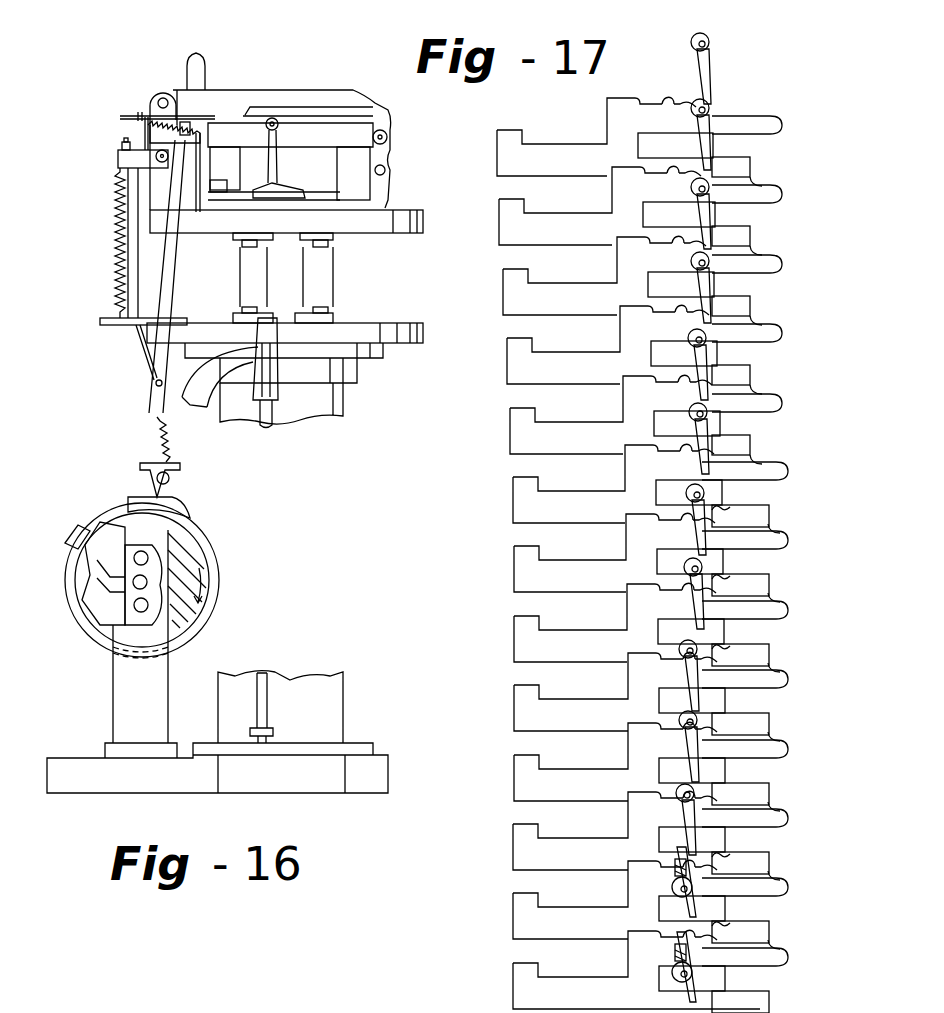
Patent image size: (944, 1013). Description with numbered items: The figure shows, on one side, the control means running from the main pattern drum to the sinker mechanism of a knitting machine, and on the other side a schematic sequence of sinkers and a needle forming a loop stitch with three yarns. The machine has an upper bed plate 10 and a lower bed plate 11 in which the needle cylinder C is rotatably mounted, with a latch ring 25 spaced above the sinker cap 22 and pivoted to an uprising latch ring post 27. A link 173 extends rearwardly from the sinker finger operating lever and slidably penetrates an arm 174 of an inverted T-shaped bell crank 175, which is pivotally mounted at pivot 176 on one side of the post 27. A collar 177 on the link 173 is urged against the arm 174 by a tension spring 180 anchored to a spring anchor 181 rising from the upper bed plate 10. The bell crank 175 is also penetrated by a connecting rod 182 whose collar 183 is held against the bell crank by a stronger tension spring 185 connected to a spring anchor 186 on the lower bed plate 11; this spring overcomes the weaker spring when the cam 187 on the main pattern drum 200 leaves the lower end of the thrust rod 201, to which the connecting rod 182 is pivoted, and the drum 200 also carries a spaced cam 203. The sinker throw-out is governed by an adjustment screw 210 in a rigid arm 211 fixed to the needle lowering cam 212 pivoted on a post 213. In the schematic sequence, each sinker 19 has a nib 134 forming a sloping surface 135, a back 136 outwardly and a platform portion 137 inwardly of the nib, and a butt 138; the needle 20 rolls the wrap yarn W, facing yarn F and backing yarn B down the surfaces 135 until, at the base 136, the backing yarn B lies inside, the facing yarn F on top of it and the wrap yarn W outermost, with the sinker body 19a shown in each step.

In FIG. 16, the upper bed plate 10 is at (412, 210).
In FIG. 16, the lower bed plate 11 is at (418, 325).
In FIG. 16, the sinker cap 22 is at (350, 150).
In FIG. 16, the latch ring 25 is at (310, 90).
In FIG. 16, the latch ring post 27 is at (170, 205).
In FIG. 16, the link 173 is at (183, 121).
In FIG. 16, the arm 174 is at (148, 131).
In FIG. 16, the bell crank 175 is at (118, 160).
In FIG. 16, the pivot 176 is at (165, 163).
In FIG. 16, the collar 177 is at (138, 112).
In FIG. 16, the tension spring 180 is at (153, 98).
In FIG. 16, the spring anchor 181 is at (200, 172).
In FIG. 16, the connecting rod 182 is at (137, 236).
In FIG. 16, the collar 183 is at (122, 146).
In FIG. 16, the tension spring 185 is at (115, 236).
In FIG. 16, the spring anchor 186 is at (102, 325).
In FIG. 16, the cam 187 is at (182, 510).
In FIG. 16, the main pattern drum 200 is at (217, 578).
In FIG. 16, the thrust rod 201 is at (150, 402).
In FIG. 16, the cam 203 is at (76, 530).
In FIG. 16, the adjustment screw 210 is at (277, 128).
In FIG. 16, the rigid arm 211 is at (278, 158).
In FIG. 16, the needle lowering cam 212 is at (285, 184).
In FIG. 16, the post 213 is at (220, 205).
In FIG. 16, the needle cylinder C is at (327, 277).
In FIG. 17, the sinker 19 is at (776, 118).
In FIG. 17, the heddle block 19a is at (760, 580).
In FIG. 17, the needle 20 is at (712, 41).
In FIG. 17, the nib 134 is at (697, 921).
In FIG. 17, the sloping surface 135 is at (670, 92).
In FIG. 17, the back 136 is at (645, 95).
In FIG. 17, the platform portion 137 is at (730, 855).
In FIG. 17, the butt 138 is at (628, 553).
In FIG. 17, the wrap yarn W is at (686, 500).
In FIG. 17, the facing yarn F is at (696, 530).
In FIG. 17, the backing yarn B is at (688, 501).